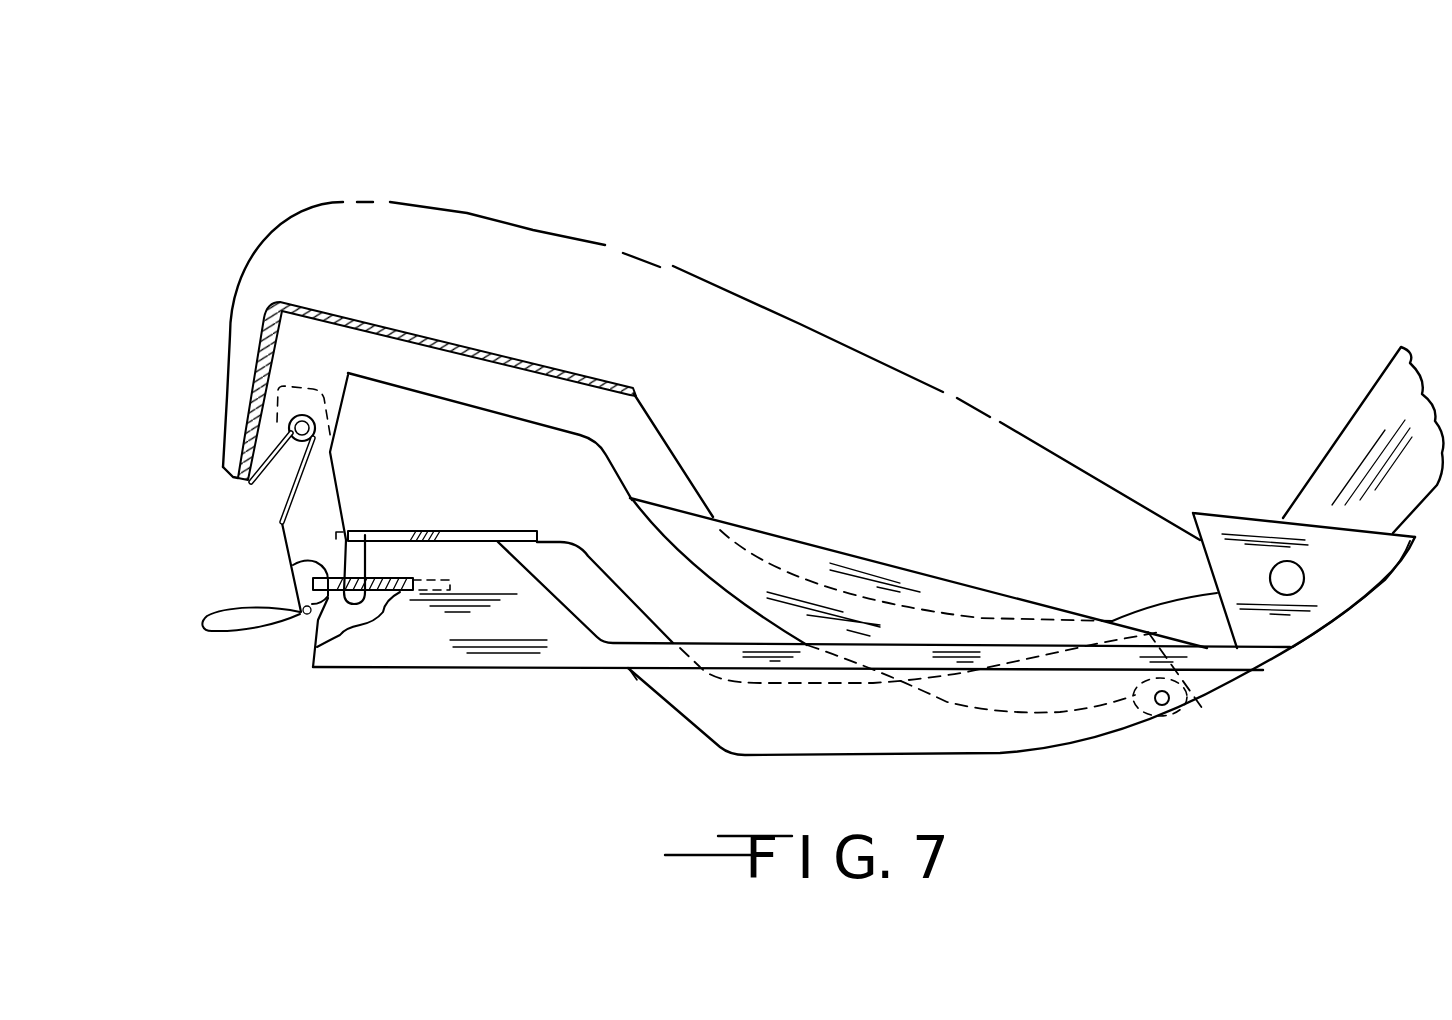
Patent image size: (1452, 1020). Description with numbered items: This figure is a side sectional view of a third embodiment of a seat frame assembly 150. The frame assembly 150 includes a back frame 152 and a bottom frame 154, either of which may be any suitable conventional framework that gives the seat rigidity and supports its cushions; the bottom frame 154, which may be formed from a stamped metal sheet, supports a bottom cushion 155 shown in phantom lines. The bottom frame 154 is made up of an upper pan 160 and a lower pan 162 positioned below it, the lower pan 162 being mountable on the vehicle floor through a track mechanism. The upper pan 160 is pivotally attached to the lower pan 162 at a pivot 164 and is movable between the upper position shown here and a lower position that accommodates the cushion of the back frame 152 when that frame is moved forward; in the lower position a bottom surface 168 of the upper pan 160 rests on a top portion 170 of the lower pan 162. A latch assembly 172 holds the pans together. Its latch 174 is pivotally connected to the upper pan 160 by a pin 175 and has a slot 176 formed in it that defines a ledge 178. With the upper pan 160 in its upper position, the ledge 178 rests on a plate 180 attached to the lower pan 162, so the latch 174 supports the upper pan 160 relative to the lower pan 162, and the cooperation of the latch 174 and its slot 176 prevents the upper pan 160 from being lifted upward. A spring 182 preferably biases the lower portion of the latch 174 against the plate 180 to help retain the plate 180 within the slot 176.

The frame assembly 150 is at (1074, 237).
The back frame 152 is at (1357, 412).
The bottom frame 154 is at (1043, 585).
The bottom cushion 155 is at (605, 245).
The upper pan 160 is at (693, 482).
The lower pan 162 is at (655, 700).
The pivot 164 is at (1172, 703).
The bottom surface 168 is at (487, 362).
The top portion 170 is at (442, 531).
The latch assembly 172 is at (197, 491).
The latch 174 is at (327, 503).
The pin 175 is at (299, 426).
The slot 176 is at (293, 564).
The ledge 178 is at (363, 535).
The plate 180 is at (383, 612).
The spring 182 is at (295, 447).